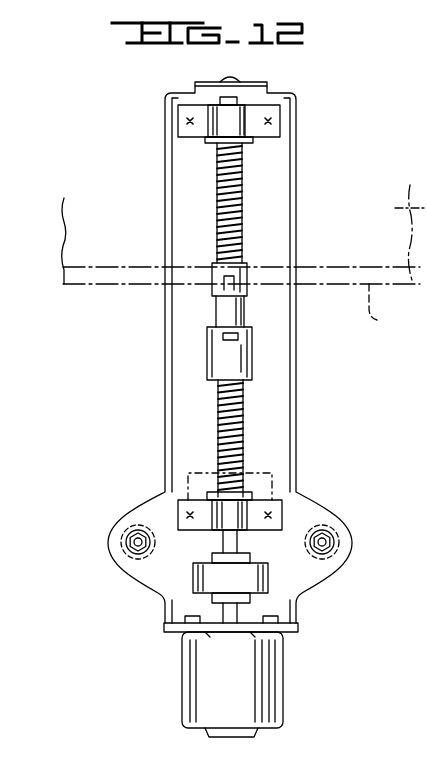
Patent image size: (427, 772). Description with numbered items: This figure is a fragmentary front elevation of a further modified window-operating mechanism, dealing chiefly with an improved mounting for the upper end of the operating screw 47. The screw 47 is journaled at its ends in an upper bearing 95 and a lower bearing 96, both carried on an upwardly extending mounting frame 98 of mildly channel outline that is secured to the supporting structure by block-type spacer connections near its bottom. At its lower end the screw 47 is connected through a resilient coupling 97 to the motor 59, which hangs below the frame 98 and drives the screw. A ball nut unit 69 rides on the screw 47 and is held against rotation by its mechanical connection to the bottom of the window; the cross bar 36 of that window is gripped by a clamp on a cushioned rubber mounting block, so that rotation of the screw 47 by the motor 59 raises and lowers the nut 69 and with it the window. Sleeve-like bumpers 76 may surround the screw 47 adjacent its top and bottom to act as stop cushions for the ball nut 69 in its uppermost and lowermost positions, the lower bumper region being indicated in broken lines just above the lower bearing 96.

The cross bar 36 is at (244, 262).
The operating screw 47 is at (240, 220).
The motor 59 is at (257, 692).
The ball nut unit 69 is at (256, 342).
The sleeve-like bumpers 76 is at (263, 473).
The upper bearing 95 is at (238, 118).
The lower bearing 96 is at (237, 515).
The resilient coupling 97 is at (257, 575).
The mounting frame 98 is at (275, 388).